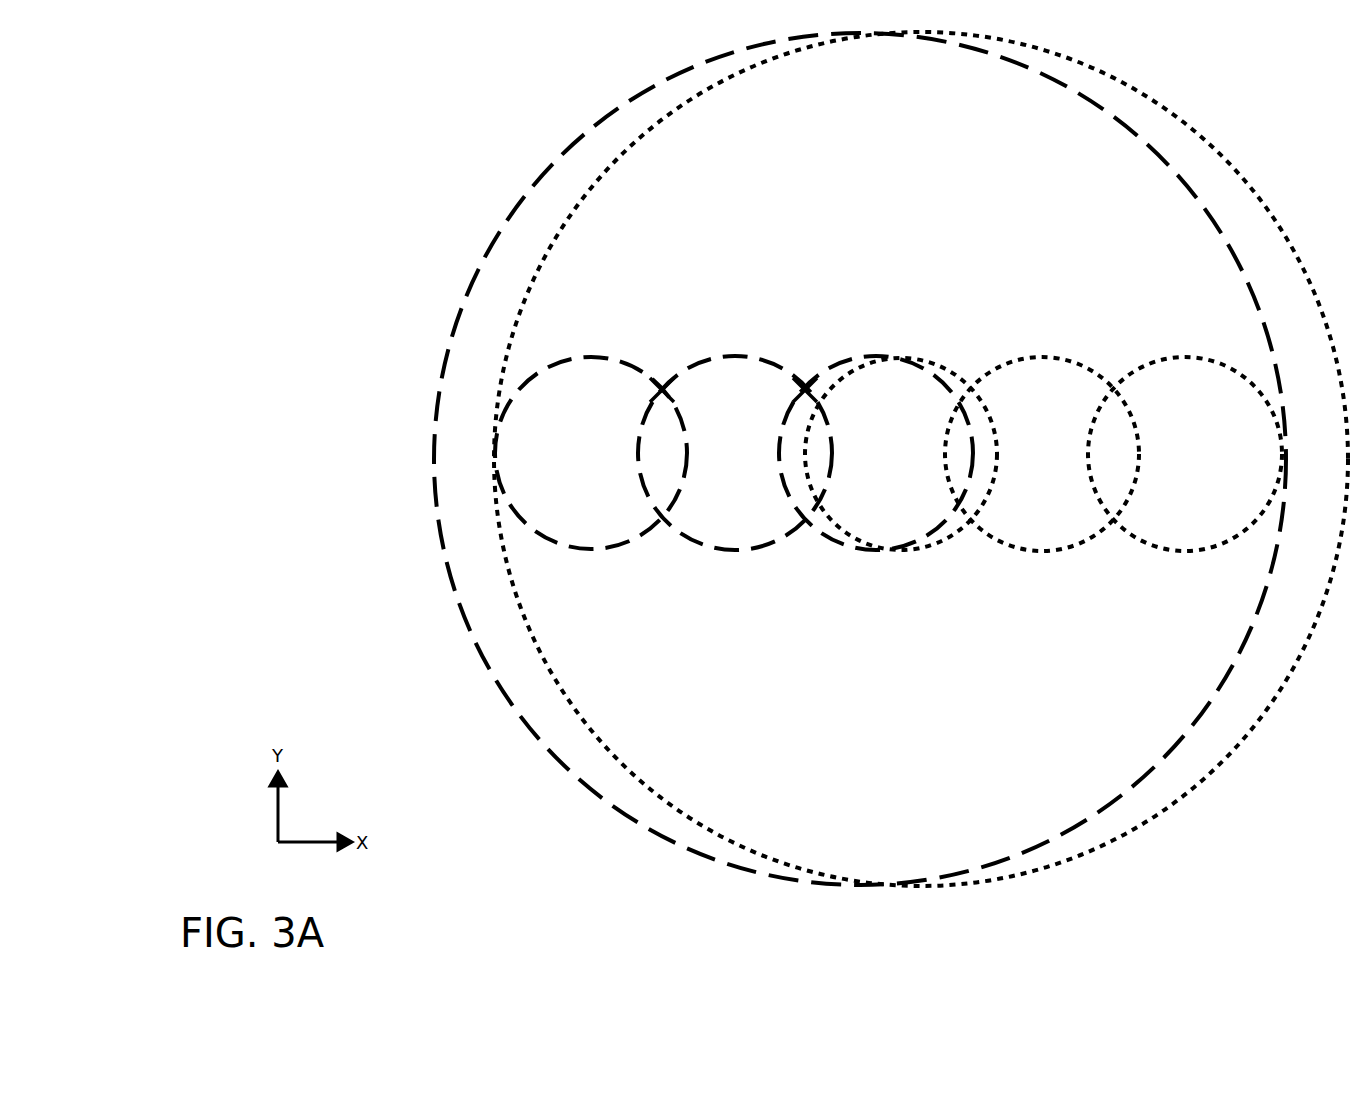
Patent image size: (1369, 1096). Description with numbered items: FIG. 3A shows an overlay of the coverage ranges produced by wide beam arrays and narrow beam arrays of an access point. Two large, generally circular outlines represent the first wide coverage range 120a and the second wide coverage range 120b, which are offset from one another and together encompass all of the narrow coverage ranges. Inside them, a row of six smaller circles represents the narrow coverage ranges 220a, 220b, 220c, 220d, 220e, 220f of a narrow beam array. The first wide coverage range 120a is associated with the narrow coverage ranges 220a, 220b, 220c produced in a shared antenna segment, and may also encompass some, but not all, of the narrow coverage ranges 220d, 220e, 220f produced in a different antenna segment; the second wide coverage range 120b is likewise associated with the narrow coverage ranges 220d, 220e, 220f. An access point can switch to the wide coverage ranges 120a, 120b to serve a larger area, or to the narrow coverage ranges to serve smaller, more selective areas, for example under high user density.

The first wide coverage range 120a is at (457, 322).
The second wide coverage range 120b is at (1207, 140).
The narrow coverage range 220a is at (862, 358).
The narrow coverage range 220b is at (745, 358).
The narrow coverage range 220c is at (577, 357).
The narrow coverage range 220d is at (930, 550).
The narrow coverage range 220e is at (1038, 552).
The narrow coverage range 220f is at (1180, 552).